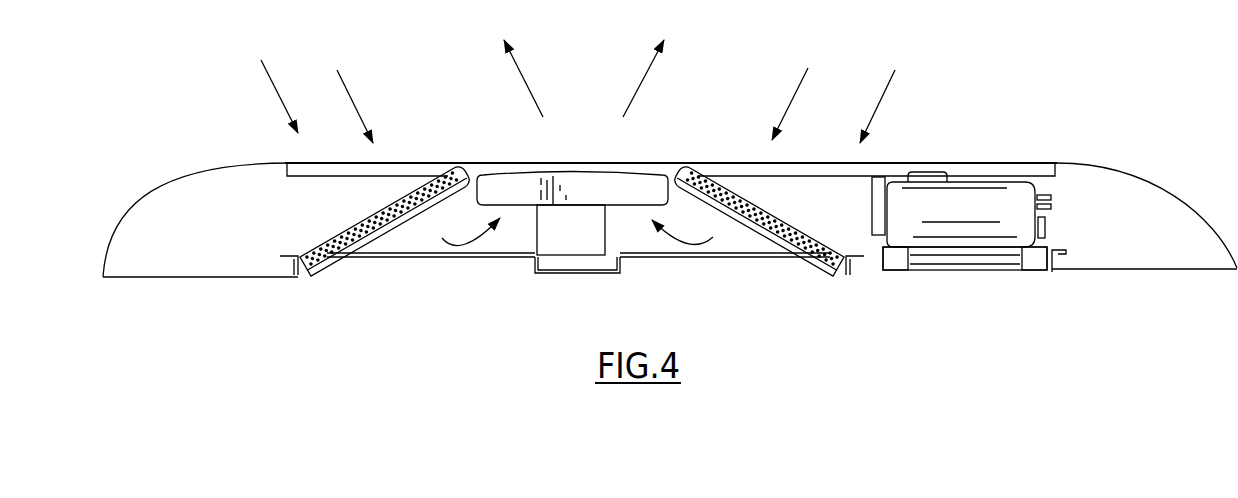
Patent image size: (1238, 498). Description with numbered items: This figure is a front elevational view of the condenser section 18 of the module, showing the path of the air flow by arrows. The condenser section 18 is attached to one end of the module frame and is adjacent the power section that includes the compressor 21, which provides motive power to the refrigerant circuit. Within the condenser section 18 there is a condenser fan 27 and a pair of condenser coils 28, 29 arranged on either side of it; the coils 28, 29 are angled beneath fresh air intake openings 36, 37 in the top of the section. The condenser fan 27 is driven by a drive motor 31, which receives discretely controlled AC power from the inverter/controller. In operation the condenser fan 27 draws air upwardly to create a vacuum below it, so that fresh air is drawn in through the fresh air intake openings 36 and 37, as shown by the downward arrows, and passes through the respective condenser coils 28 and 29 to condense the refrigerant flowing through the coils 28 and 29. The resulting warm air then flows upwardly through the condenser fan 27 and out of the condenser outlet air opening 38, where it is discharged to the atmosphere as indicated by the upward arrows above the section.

The condenser section 18 is at (228, 292).
The compressor 21 is at (978, 212).
The condenser fan 27 is at (528, 190).
The condenser coil 28 is at (770, 230).
The condenser coil 29 is at (358, 240).
The drive motor 31 is at (580, 243).
The fresh air intake opening 36 is at (803, 160).
The fresh air intake opening 37 is at (392, 161).
The condenser outlet air opening 38 is at (622, 161).